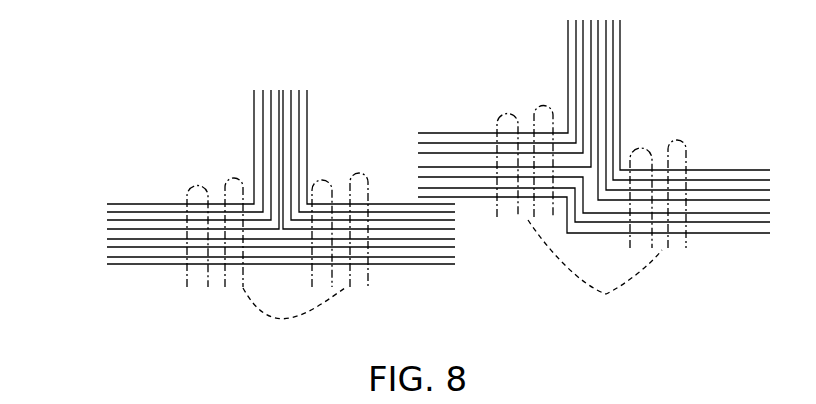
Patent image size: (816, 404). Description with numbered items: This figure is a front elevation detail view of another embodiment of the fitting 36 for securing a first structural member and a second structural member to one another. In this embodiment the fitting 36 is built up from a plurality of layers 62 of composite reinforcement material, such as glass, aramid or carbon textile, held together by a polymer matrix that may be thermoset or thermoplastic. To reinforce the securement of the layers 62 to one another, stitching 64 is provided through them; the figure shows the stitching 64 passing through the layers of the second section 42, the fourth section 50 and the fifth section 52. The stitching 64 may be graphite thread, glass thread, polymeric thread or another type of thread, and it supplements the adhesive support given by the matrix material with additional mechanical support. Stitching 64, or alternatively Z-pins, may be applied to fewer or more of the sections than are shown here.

The fitting 36 is at (241, 212).
The second section 42 is at (281, 299).
The layers 62 is at (241, 287).
The stitching 64 is at (452, 283).
The fifth section 52 is at (446, 147).
The fourth section 50 is at (594, 134).